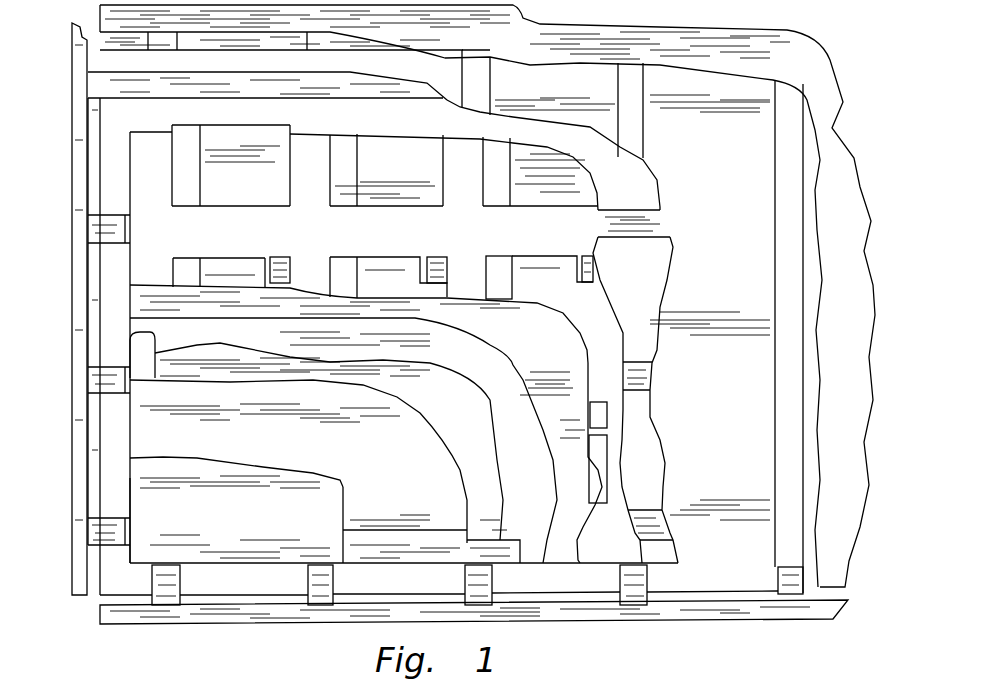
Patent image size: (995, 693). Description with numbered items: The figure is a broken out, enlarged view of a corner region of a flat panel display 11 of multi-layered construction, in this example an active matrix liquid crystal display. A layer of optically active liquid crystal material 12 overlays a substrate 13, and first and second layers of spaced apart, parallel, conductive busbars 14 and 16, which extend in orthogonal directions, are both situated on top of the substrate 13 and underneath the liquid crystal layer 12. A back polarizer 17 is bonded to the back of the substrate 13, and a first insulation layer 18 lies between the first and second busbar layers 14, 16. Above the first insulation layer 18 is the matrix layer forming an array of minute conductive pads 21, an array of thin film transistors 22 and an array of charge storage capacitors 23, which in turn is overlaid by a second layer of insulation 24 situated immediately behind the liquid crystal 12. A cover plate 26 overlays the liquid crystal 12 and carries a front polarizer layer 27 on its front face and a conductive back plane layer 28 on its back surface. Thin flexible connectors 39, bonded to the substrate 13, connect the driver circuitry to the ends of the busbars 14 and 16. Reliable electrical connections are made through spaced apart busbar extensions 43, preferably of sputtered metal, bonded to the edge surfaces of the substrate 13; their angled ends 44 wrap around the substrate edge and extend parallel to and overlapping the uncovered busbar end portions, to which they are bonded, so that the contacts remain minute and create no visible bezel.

The flat panel display 11 is at (837, 42).
The optically active material layer 12 is at (537, 487).
The substrate 13 is at (722, 160).
The first layer of busbars 14 is at (773, 235).
The second layer of busbars 16 is at (284, 100).
The back polarizer 17 is at (781, 68).
The first insulation layer 18 is at (629, 186).
The conductive pads 21 is at (262, 193).
The thin film transistors 22 is at (282, 256).
The charge storage capacitors 23 is at (500, 262).
The second layer of insulation 24 is at (560, 353).
The cover plate 26 is at (366, 453).
The front polarizer layer 27 is at (258, 525).
The conductive back plane layer 28 is at (464, 414).
The thin flexible connectors 39 is at (73, 330).
The busbar extensions 43 is at (100, 518).
The angled ends 44 is at (113, 546).